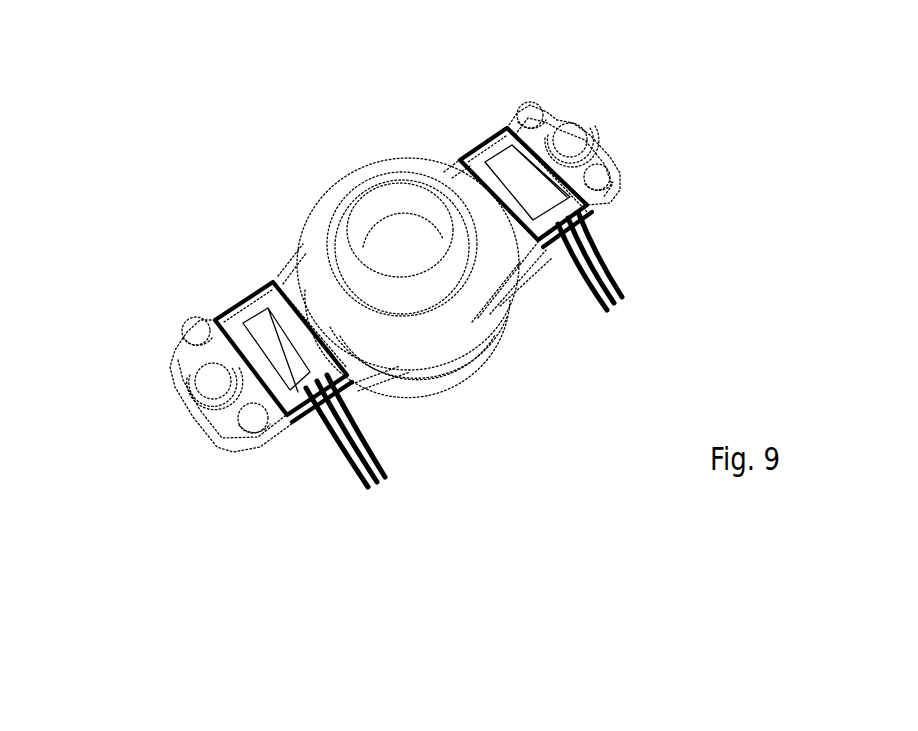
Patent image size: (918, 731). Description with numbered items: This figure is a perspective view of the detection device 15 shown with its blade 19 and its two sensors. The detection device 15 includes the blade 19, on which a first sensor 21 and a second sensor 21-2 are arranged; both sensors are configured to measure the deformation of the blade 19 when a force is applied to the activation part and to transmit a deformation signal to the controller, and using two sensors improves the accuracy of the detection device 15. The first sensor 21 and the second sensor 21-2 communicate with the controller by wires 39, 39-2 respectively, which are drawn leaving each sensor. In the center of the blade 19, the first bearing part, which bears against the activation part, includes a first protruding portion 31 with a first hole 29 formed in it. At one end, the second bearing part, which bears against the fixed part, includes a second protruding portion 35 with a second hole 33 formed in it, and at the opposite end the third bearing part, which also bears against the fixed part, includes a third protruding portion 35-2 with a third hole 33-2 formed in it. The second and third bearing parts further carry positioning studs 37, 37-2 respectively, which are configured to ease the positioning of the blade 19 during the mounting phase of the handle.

The detection device 15 is at (445, 89).
The blade 19 is at (287, 306).
The first sensor 21 is at (580, 208).
The second sensor 21-2 is at (295, 353).
The first hole 29 is at (381, 202).
The first protruding portion 31 is at (435, 287).
The second hole 33 is at (578, 125).
The third hole 33-2 is at (195, 363).
The second protruding portion 35 is at (577, 157).
The third protruding portion 35-2 is at (200, 395).
The positioning stud 37 is at (605, 180).
The positioning stud 37-2 is at (252, 418).
The wires 39 is at (612, 283).
The wires 39-2 is at (370, 450).